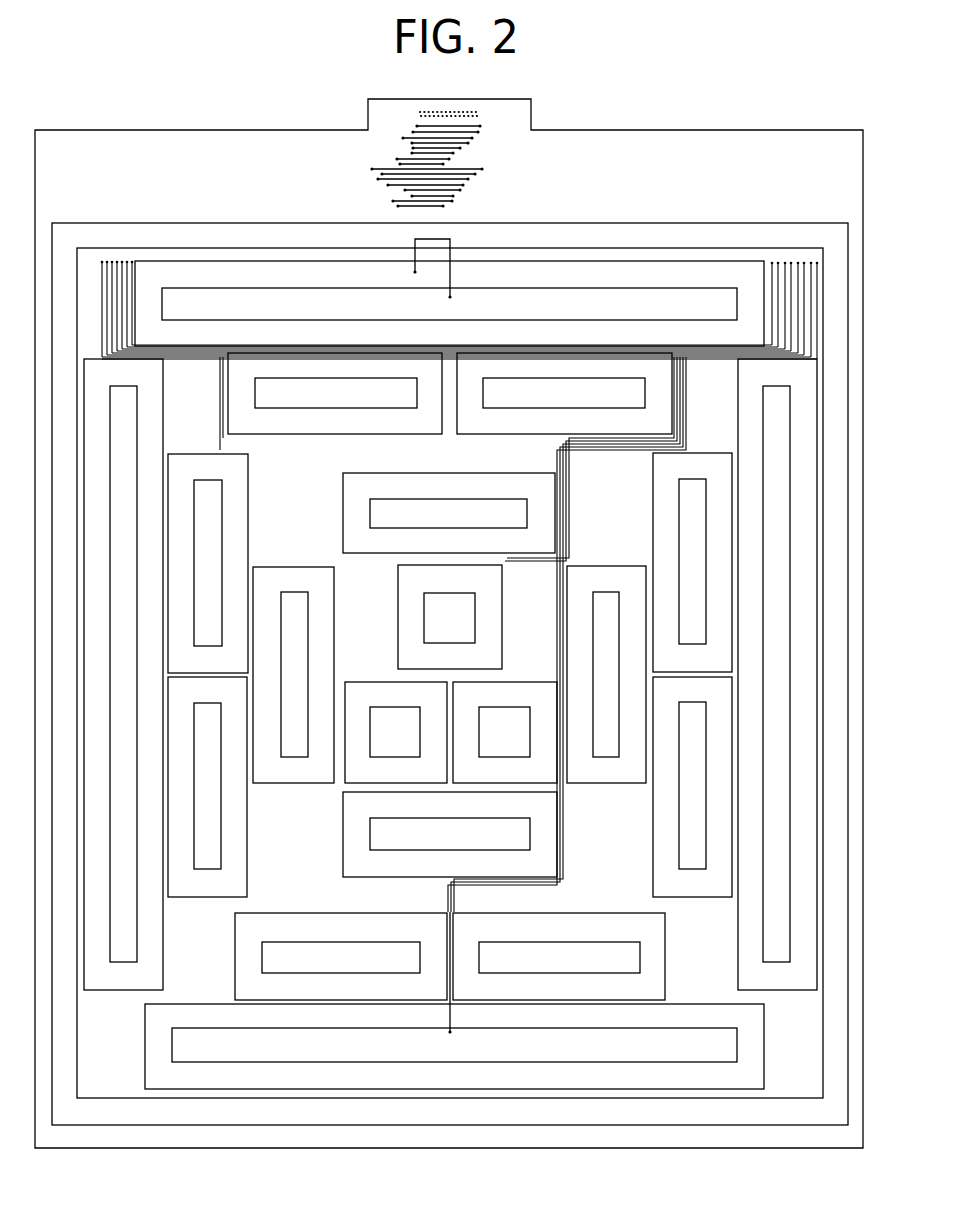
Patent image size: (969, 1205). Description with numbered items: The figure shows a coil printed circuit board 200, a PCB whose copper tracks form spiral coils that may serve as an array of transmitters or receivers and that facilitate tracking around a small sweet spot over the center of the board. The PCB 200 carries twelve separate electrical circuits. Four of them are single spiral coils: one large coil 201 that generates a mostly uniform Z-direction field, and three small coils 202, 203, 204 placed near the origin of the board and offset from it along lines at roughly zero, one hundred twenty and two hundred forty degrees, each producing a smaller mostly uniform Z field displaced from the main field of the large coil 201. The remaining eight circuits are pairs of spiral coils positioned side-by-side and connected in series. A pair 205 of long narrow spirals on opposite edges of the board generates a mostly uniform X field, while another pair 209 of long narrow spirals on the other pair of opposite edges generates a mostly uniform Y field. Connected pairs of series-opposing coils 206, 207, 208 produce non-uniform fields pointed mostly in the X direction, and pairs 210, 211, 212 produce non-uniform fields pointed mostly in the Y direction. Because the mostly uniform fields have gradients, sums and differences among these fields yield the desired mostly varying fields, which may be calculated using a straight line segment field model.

The coil printed circuit board 200 is at (641, 91).
The single large coil 201 is at (434, 1121).
The small coil 202 is at (450, 553).
The small coil 203 is at (507, 675).
The small coil 204 is at (507, 558).
The pair of long narrow spirals 205 is at (123, 359).
The pair of series-opposing coils 206 is at (220, 450).
The pair of series-opposing coils 207 is at (208, 673).
The pair of series-opposing coils 208 is at (223, 438).
The pair of long narrow spirals 209 is at (434, 344).
The pair of series-opposing coils 210 is at (335, 353).
The pair of series-opposing coils 211 is at (564, 353).
The pair of series-opposing coils 212 is at (449, 346).